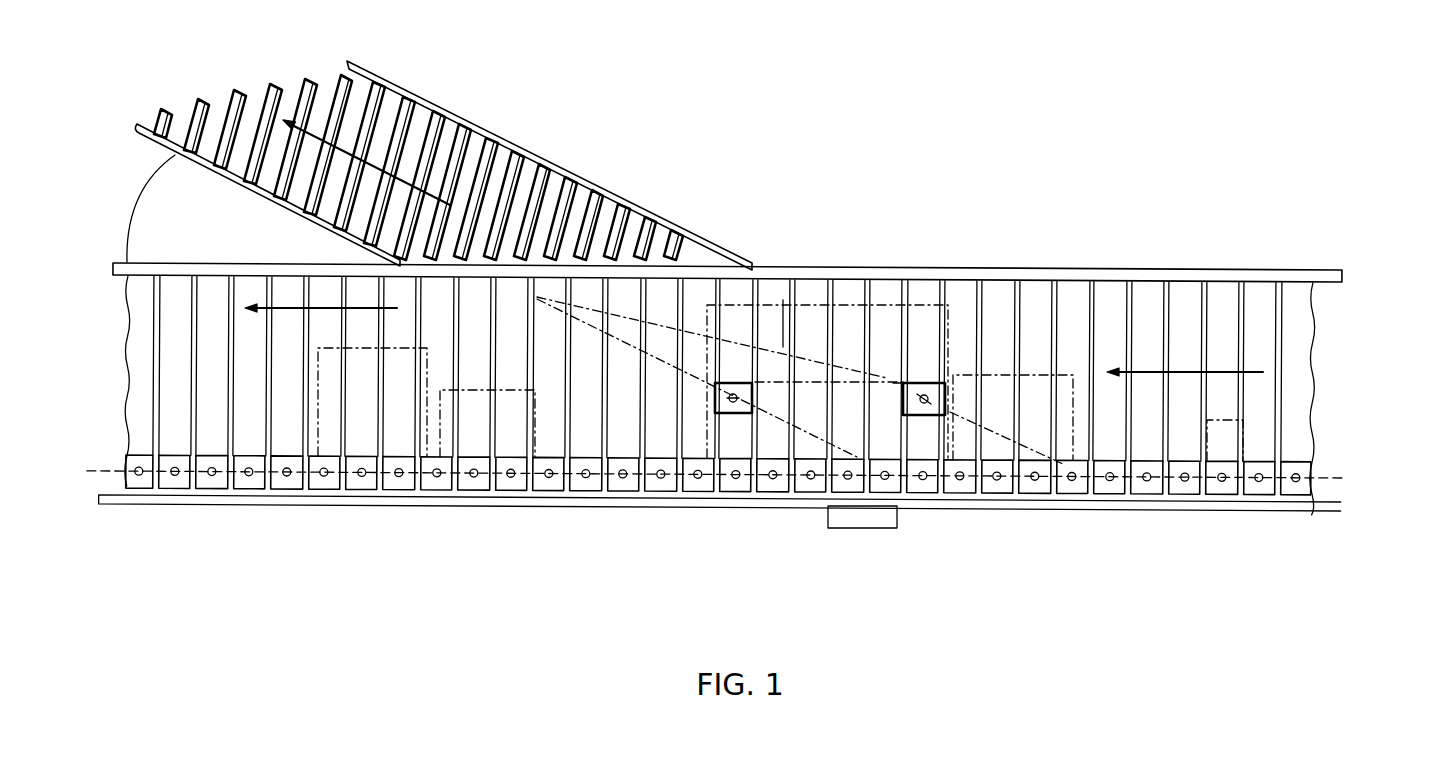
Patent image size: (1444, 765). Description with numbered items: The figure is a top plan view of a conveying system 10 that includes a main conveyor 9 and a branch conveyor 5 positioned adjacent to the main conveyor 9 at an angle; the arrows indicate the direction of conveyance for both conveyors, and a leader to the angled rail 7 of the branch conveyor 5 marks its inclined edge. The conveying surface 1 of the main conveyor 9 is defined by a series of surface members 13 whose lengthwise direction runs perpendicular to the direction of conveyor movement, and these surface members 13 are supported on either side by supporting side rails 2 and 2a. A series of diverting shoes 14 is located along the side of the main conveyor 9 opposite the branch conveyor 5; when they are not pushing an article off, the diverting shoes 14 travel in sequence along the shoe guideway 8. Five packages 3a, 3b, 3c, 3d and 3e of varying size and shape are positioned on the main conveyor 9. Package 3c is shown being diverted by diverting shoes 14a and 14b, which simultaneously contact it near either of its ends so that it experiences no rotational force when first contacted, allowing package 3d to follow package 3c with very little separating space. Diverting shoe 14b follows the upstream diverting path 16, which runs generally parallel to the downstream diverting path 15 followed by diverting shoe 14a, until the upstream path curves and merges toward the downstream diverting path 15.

The conveying surface 1 is at (1099, 334).
The supporting side rail 2 is at (1290, 268).
The supporting side rail 2a is at (1313, 512).
The package 3a is at (428, 435).
The package 3b is at (530, 427).
The package 3c is at (805, 307).
The package 3d is at (1073, 425).
The package 3e is at (1247, 442).
The branch conveyor 5 is at (440, 100).
The magazine support rail 7 is at (258, 200).
The shoe guideway 8 is at (112, 468).
The main conveyor 9 is at (1313, 323).
The conveying system 10 is at (1227, 183).
The surface members 13 is at (320, 290).
The diverting shoes 14 is at (322, 487).
The diverting shoe 14a is at (735, 415).
The diverting shoe 14b is at (922, 415).
The downstream diverting path 15 is at (658, 355).
The upstream diverting path 16 is at (783, 347).
The transfer point T is at (893, 382).